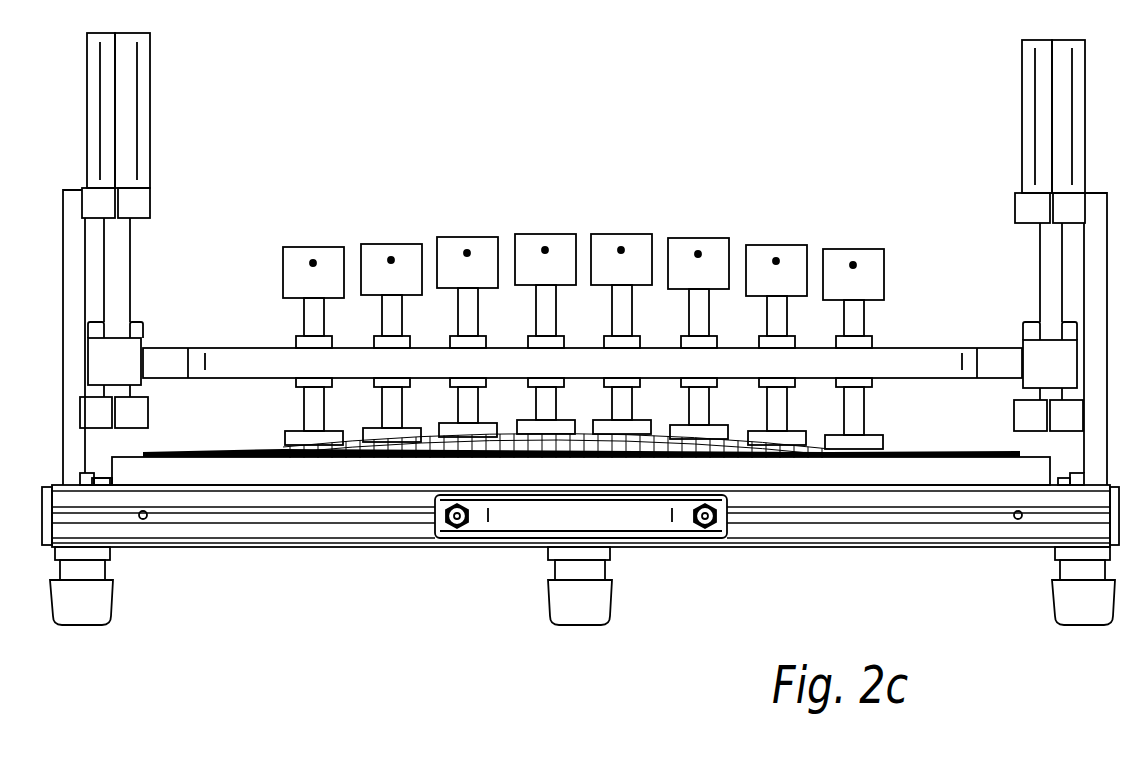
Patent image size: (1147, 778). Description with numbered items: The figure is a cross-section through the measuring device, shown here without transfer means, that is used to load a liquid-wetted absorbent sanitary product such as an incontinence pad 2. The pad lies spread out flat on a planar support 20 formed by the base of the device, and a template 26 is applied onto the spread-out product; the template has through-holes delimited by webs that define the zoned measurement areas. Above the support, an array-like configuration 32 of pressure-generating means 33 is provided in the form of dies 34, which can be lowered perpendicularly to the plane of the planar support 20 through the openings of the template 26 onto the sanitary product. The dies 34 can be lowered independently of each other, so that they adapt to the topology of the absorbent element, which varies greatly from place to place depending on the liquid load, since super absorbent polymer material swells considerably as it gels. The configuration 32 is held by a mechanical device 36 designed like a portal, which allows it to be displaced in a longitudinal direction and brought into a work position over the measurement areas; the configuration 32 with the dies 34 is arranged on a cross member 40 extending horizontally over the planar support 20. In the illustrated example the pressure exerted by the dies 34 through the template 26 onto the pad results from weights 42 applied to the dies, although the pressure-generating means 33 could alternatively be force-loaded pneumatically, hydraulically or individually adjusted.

The incontinence pad 2 is at (402, 456).
The planar support 20 is at (193, 470).
The template 26 is at (237, 445).
The configuration of pressure-generating means 32 is at (583, 224).
The pressure-generating means 33 is at (610, 413).
The die 34 is at (777, 412).
The mechanical device 36 is at (146, 301).
The cross member 40 is at (915, 357).
The weight 42 is at (766, 257).